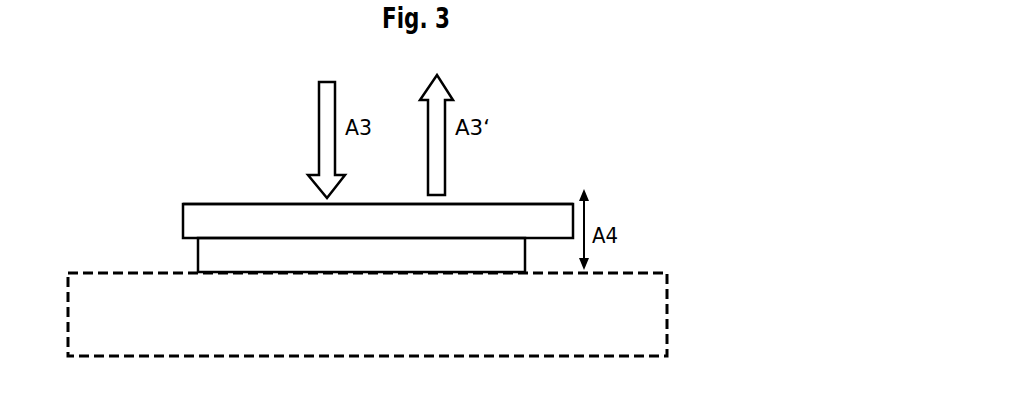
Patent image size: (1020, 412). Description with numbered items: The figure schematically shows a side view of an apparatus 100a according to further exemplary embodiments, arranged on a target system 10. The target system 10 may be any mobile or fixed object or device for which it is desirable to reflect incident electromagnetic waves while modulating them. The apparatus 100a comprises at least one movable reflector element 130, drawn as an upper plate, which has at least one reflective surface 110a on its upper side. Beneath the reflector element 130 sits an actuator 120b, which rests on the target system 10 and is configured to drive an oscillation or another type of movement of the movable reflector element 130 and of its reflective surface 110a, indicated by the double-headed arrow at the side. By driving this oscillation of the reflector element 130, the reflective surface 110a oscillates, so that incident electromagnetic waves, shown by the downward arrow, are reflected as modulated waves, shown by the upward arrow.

The apparatus 100a is at (296, 172).
The reflective surface 110a is at (247, 203).
The movable reflector element 130 is at (183, 211).
The actuator 120b is at (198, 259).
The target system 10 is at (670, 292).